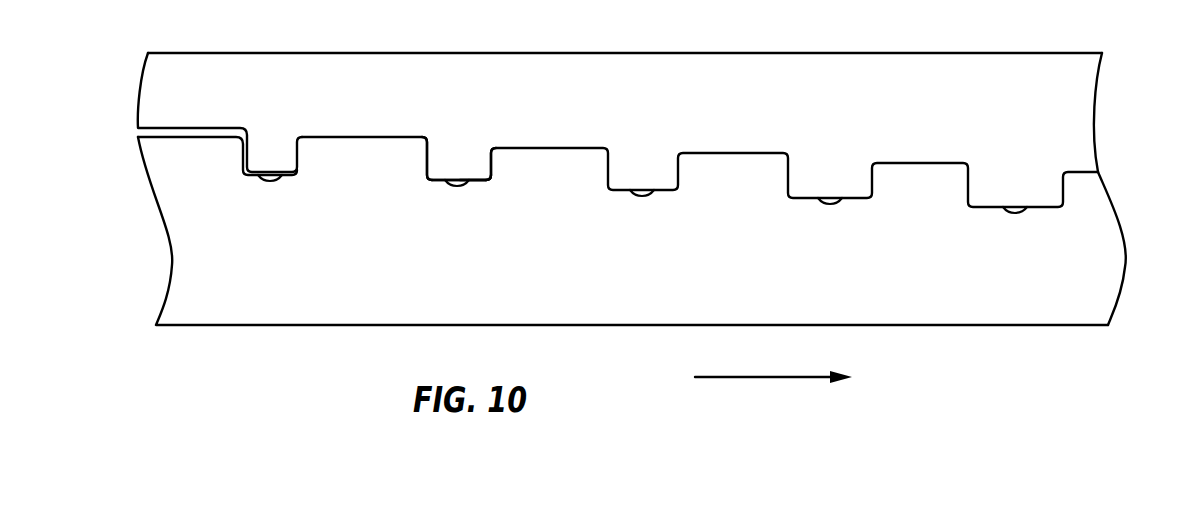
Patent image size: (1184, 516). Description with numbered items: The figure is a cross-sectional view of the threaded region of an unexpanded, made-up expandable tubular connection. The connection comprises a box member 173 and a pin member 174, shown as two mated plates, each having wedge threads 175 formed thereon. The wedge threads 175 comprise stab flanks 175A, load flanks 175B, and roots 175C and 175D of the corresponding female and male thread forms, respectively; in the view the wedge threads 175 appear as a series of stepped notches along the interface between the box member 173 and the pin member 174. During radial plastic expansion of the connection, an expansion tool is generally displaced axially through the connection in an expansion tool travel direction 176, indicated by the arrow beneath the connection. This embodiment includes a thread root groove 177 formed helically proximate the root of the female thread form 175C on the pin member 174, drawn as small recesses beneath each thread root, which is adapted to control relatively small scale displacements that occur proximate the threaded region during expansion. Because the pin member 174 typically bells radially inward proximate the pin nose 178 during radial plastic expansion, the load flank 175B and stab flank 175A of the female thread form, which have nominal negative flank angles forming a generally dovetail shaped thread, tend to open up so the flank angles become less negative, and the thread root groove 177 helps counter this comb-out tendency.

The box member 173 is at (970, 67).
The pin member 174 is at (268, 315).
The wedge threads 175 is at (438, 170).
The stab flank 175A is at (494, 163).
The load flank 175B is at (423, 161).
The root of female thread form 175C is at (480, 183).
The root of male thread form 175D is at (475, 163).
The expansion tool travel direction 176 is at (763, 378).
The thread root groove 177 is at (830, 207).
The pin nose 178 is at (1183, 306).